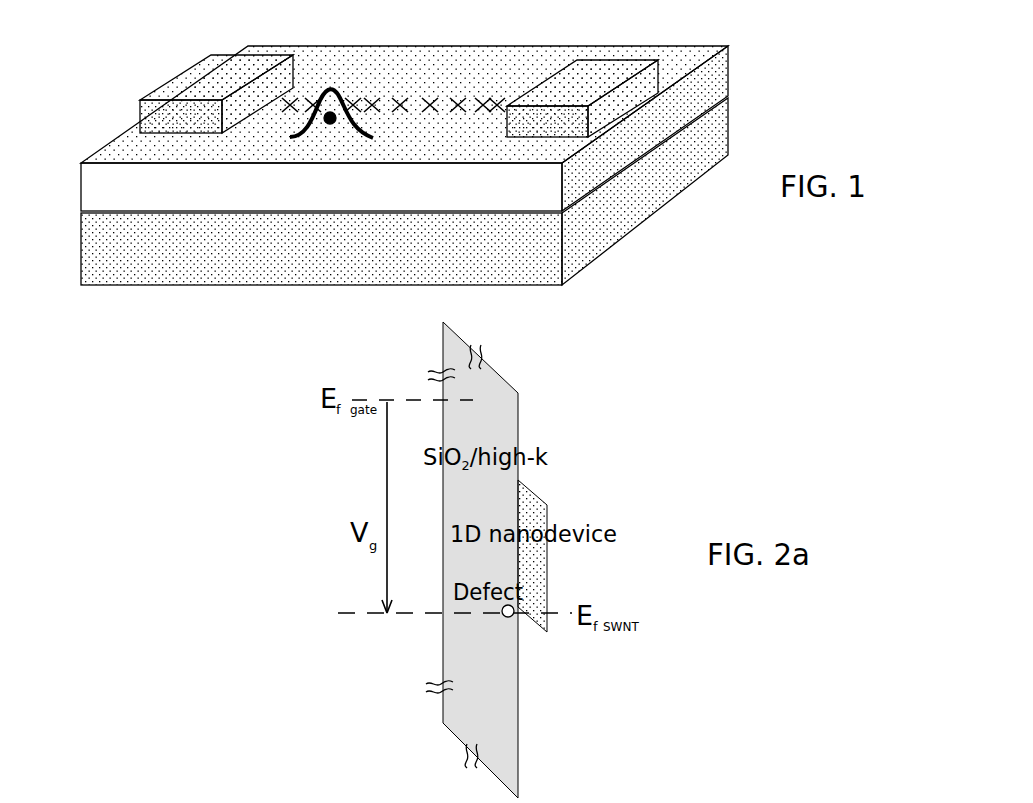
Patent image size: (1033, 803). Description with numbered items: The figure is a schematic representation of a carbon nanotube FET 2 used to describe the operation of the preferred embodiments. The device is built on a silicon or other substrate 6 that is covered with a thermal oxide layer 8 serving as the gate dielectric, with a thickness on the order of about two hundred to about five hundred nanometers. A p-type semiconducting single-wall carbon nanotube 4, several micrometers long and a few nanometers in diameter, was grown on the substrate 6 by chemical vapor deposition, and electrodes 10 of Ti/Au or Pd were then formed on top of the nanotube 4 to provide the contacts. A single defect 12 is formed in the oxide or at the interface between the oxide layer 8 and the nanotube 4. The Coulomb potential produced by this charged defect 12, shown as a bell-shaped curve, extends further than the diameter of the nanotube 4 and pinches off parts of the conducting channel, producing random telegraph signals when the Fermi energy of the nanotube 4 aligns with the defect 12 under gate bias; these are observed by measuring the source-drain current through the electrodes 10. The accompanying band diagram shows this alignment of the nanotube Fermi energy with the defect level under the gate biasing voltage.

The carbon nanotube FET 2 is at (757, 102).
The single-wall carbon nanotube 4 is at (462, 93).
The substrate 6 is at (123, 265).
The thermal oxide layer 8 is at (85, 183).
The electrodes 10 is at (192, 75).
The defect 12 is at (330, 125).